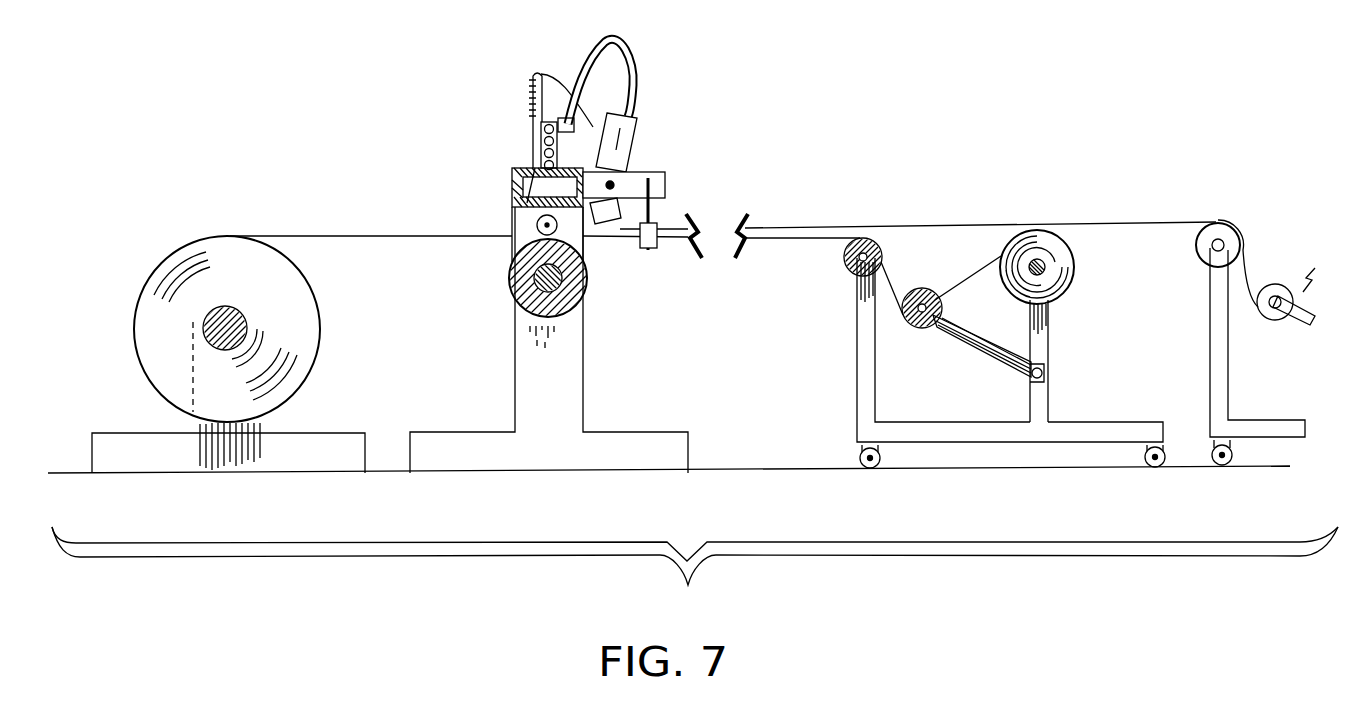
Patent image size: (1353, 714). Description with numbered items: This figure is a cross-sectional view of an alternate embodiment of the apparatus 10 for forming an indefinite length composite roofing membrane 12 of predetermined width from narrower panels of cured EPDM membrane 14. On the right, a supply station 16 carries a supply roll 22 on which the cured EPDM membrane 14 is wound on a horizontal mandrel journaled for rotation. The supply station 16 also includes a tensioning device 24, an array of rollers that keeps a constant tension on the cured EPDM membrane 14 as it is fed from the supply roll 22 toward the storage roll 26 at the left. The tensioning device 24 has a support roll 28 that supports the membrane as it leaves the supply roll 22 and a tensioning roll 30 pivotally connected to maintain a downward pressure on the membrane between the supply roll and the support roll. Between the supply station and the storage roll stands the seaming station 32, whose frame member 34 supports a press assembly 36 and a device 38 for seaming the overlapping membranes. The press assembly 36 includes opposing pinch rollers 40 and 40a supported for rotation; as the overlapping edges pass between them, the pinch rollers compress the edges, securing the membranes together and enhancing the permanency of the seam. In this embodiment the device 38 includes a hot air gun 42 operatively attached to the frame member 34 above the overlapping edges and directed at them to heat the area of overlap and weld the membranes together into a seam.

The apparatus 10 is at (1035, 140).
The composite roofing membrane 12 is at (317, 235).
The cured EPDM membrane 14 is at (972, 280).
The supply station 16 is at (1065, 400).
The supply roll 22 is at (1075, 261).
The tensioning device 24 is at (908, 210).
The storage roll 26 is at (165, 360).
The support roll 28 is at (852, 264).
The tensioning roll 30 is at (915, 331).
The seaming station 32 is at (650, 70).
The frame member 34 is at (573, 395).
The press assembly 36 is at (497, 215).
The device for seaming 38 is at (678, 168).
The pinch roller 40 is at (527, 195).
The pinch roller 40a is at (585, 292).
The hot air gun 42 is at (633, 133).